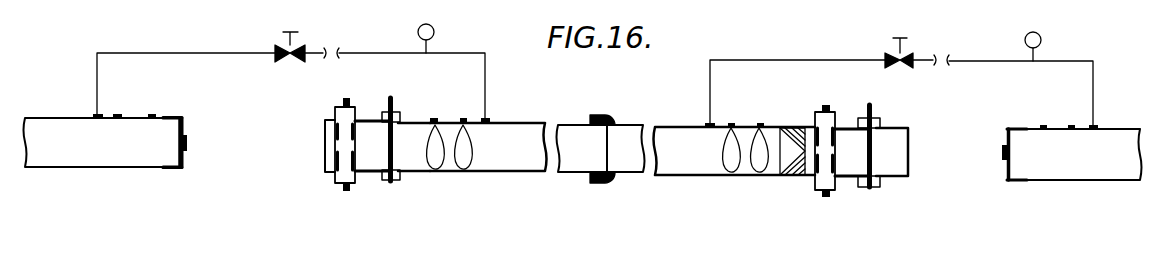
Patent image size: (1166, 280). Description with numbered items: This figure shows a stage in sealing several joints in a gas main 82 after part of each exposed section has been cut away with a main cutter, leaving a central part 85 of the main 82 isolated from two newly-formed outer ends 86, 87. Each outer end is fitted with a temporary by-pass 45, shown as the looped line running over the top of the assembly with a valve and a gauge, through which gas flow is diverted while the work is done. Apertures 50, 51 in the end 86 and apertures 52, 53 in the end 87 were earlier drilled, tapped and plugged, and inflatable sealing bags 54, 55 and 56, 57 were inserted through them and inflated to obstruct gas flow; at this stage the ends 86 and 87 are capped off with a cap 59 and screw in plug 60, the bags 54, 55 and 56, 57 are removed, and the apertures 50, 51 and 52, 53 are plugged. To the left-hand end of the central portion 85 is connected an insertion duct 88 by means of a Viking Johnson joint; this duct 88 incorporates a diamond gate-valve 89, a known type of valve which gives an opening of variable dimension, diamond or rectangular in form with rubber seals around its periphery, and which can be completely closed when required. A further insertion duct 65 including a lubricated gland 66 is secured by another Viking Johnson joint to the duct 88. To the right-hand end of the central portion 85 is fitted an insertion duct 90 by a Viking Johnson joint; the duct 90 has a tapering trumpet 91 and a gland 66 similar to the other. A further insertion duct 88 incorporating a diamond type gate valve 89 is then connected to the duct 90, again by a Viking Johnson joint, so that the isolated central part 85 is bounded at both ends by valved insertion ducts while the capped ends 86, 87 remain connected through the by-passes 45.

The temporary by-pass 45 is at (183, 48).
The aperture 50 is at (116, 114).
The aperture 51 is at (152, 114).
The aperture 52 is at (1042, 126).
The aperture 53 is at (1072, 126).
The inflatable sealing bag 54 is at (723, 163).
The inflatable sealing bag 55 is at (752, 163).
The inflatable sealing bag 56 is at (437, 162).
The inflatable sealing bag 57 is at (466, 162).
The cap 59 is at (186, 125).
The screw in plug 60 is at (188, 144).
The insertion duct 65 is at (332, 172).
The lubricated gland 66 is at (355, 110).
The main 82 is at (540, 173).
The central part of the main 85 is at (627, 168).
The outer end of the main 86 is at (93, 160).
The outer end of the main 87 is at (1067, 168).
The insertion duct 88 is at (392, 182).
The diamond gate-valve 89 is at (392, 137).
The insertion duct 90 is at (795, 177).
The tapering trumpet 91 is at (797, 128).